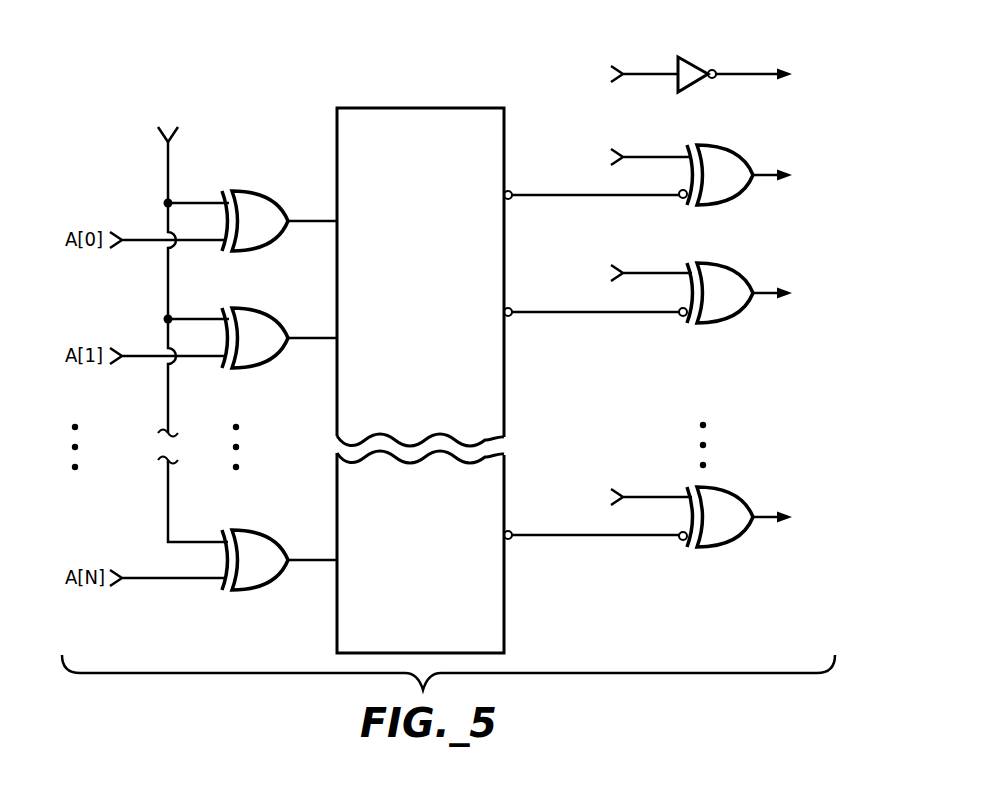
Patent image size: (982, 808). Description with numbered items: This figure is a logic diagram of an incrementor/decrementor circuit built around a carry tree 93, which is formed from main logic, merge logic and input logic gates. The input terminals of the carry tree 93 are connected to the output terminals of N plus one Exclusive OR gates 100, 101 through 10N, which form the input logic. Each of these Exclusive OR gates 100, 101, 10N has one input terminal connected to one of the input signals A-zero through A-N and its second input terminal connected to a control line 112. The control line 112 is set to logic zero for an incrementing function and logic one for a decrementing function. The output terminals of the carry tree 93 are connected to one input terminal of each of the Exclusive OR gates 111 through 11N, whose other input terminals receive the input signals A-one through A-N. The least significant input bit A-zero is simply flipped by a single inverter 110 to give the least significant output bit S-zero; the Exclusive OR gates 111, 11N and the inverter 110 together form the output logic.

The carry tree 93 is at (494, 612).
The Exclusive OR gate 100 is at (252, 203).
The Exclusive OR gate 101 is at (252, 322).
The Exclusive OR gate 10N is at (252, 545).
The inverter 110 is at (690, 58).
The Exclusive OR gate 111 is at (720, 166).
The control line 112 is at (168, 158).
The Exclusive OR gate 11N is at (720, 500).